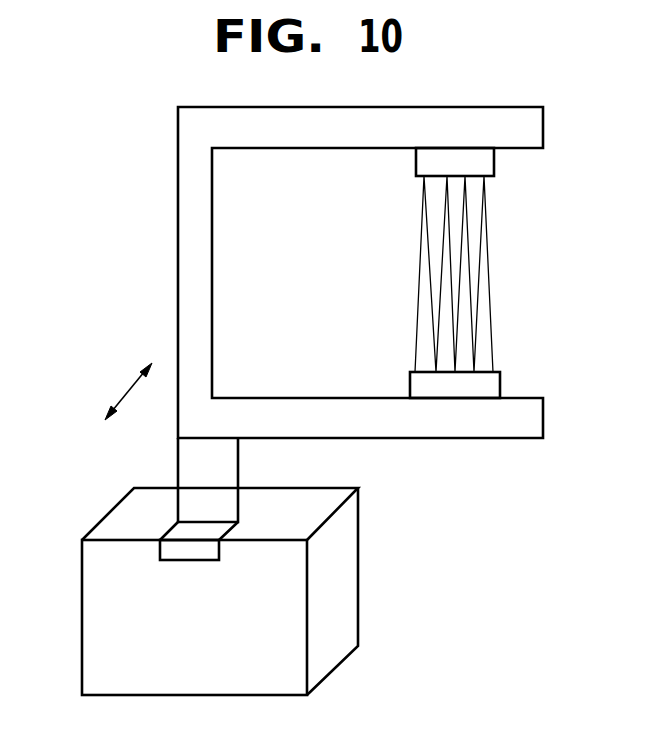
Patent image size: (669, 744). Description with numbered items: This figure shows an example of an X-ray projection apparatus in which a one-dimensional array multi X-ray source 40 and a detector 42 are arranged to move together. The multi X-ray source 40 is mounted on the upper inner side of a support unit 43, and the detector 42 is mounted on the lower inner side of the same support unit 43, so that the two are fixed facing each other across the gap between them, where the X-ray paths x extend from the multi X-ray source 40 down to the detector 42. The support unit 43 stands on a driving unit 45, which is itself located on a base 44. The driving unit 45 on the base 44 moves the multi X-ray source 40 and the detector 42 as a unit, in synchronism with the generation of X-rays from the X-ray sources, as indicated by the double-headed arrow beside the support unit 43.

The multi X-ray source 40 is at (494, 163).
The detector 42 is at (500, 381).
The support unit 43 is at (198, 187).
The base 44 is at (130, 591).
The driving unit 45 is at (184, 531).
The fiber / wire bundle x is at (473, 235).